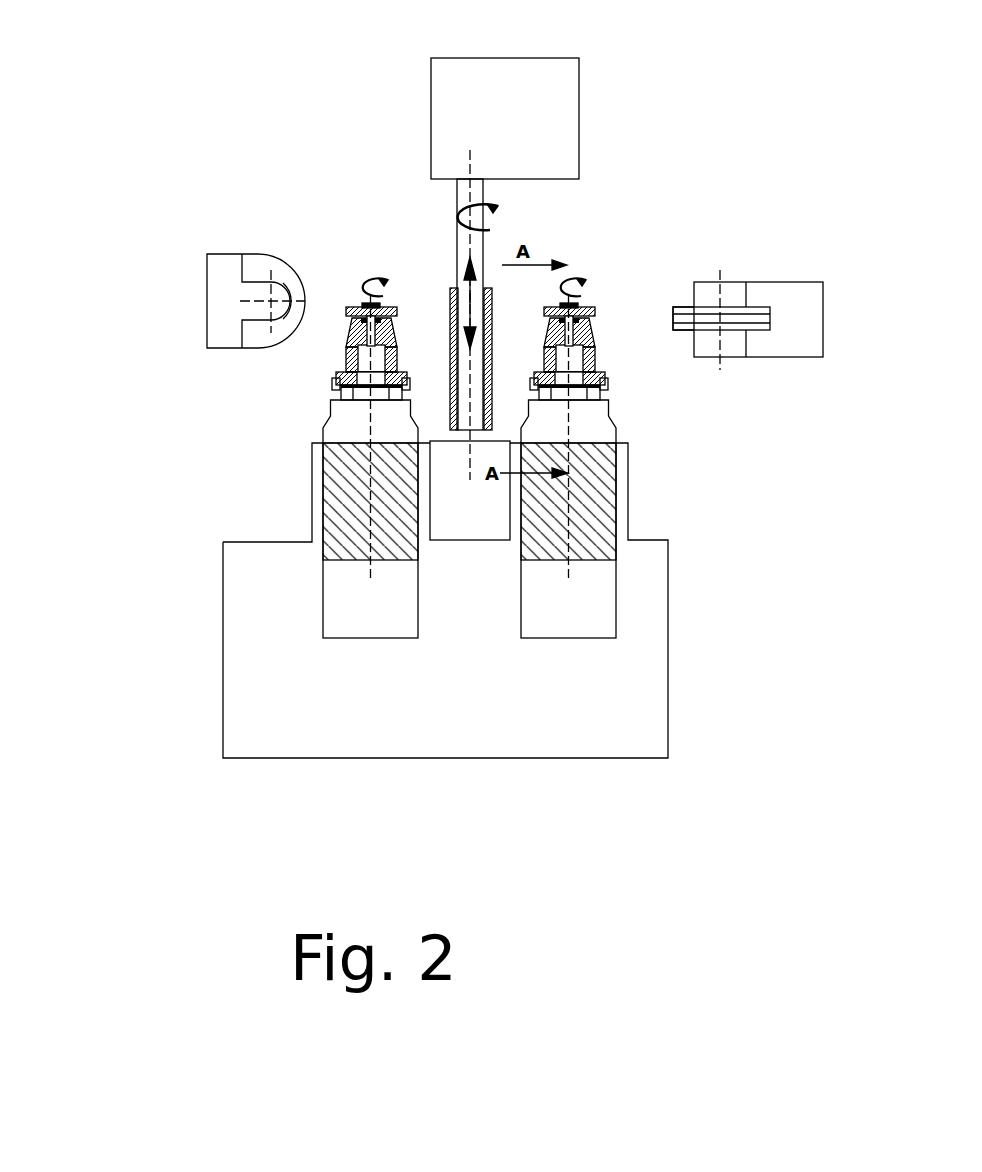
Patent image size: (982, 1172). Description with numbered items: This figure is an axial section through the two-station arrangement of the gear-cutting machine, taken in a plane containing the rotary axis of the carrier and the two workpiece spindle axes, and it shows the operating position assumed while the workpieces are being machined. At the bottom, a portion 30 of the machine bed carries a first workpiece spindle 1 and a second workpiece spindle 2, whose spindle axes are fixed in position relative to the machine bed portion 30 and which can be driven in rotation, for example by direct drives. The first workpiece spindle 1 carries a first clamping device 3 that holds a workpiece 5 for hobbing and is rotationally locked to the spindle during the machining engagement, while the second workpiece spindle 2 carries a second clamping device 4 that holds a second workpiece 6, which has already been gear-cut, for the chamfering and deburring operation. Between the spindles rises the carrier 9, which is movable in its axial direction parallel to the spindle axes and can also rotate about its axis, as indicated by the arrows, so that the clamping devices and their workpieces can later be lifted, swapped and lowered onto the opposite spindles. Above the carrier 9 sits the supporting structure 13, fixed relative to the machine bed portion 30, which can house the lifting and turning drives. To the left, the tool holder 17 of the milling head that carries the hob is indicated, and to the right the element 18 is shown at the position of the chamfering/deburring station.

The first workpiece spindle 1 is at (355, 563).
The second workpiece spindle 2 is at (590, 562).
The first clamping device 3 is at (347, 360).
The second clamping device 4 is at (600, 357).
The workpiece 5 is at (350, 303).
The second workpiece 6 is at (590, 300).
The carrier 9 is at (448, 287).
The supporting structure 13 is at (431, 165).
The tool holder 17 is at (205, 300).
The tool holder block 18 is at (763, 282).
The machine bed portion 30 is at (645, 700).